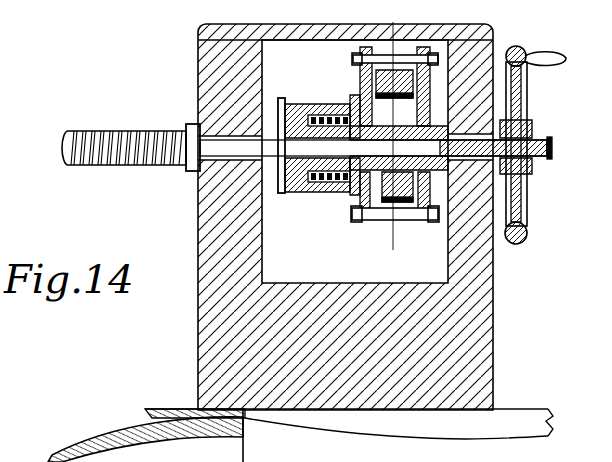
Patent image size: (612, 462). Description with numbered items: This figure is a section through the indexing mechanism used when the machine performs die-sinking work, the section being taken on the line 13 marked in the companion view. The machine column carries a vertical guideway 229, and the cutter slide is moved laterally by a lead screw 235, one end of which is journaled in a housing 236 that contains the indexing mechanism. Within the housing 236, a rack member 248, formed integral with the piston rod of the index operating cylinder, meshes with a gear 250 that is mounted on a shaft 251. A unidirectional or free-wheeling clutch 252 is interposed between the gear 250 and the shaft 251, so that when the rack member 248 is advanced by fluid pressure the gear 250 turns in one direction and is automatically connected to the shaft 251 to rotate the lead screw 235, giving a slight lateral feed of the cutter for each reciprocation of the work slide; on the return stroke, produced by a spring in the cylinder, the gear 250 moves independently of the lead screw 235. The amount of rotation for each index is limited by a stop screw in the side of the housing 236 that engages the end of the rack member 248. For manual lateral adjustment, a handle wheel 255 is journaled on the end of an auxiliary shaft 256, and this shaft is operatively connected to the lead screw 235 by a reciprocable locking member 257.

The section line 13 is at (391, 31).
The vertical guideway 229 is at (516, 422).
The lead screw 235 is at (130, 166).
The housing 236 is at (486, 292).
The rack member 248 is at (358, 76).
The gear 250 is at (406, 224).
The shaft 251 is at (270, 193).
The unidirectional clutch 252 is at (322, 123).
The handle wheel 255 is at (523, 50).
The auxiliary shaft 256 is at (484, 160).
The reciprocable locking member 257 is at (544, 140).